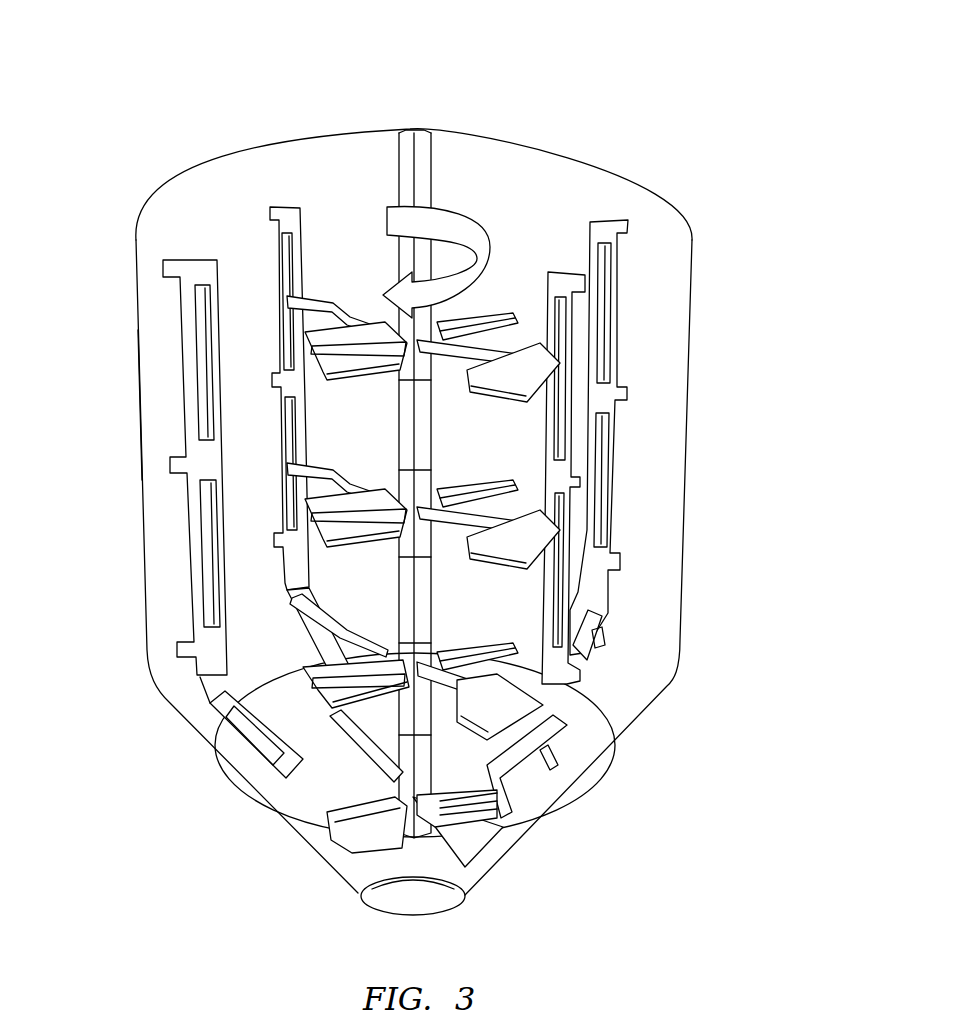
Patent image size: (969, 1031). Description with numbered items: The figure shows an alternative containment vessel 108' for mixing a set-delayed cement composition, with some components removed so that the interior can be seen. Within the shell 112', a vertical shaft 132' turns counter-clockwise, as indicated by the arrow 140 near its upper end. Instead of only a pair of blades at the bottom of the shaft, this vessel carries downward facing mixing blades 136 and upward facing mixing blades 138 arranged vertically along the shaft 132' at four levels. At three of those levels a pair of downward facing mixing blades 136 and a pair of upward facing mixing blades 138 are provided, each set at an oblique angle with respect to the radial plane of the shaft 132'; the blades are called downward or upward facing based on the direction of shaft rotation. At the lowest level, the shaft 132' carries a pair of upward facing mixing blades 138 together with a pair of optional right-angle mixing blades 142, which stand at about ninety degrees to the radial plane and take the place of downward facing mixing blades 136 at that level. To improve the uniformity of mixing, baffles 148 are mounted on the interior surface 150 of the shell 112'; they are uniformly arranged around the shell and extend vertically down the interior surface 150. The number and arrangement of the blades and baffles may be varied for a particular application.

The containment vessel 108' is at (441, 485).
The shell 112' is at (474, 522).
The shaft 132' is at (355, 448).
The downward facing mixing blades 136 is at (310, 298).
The upward facing mixing blades 138 is at (498, 308).
The arrow 140 is at (462, 218).
The right-angle mixing blades 142 is at (363, 777).
The baffles 148 is at (193, 267).
The interior surface 150 is at (158, 378).